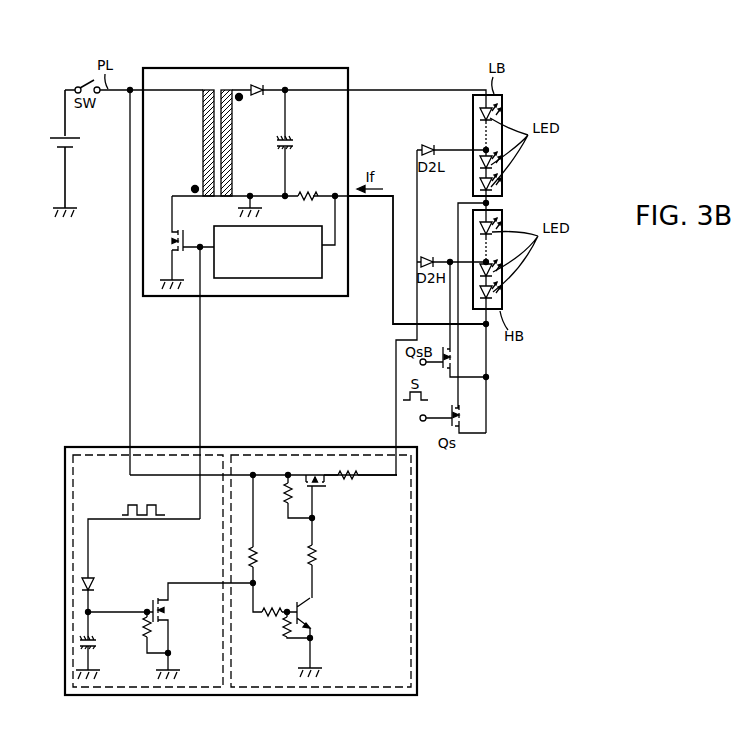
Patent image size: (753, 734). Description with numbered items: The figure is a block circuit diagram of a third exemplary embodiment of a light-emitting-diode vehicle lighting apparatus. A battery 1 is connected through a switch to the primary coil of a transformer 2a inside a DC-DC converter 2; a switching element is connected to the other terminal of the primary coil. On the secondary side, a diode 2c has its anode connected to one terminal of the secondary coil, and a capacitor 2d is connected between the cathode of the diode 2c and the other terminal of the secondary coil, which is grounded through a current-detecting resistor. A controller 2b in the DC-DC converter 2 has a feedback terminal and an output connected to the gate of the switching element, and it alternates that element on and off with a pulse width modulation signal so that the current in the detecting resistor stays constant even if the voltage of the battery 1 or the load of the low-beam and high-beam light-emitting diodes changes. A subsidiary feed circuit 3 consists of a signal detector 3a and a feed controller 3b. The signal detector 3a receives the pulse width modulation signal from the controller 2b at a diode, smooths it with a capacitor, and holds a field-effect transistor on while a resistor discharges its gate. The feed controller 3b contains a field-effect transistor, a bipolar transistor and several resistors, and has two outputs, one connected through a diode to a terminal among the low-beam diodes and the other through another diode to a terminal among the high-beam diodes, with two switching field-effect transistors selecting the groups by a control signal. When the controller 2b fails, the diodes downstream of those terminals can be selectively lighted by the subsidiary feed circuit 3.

The battery 1 is at (60, 133).
The DC-DC converter 2 is at (246, 67).
The transformer 2a is at (201, 144).
The controller 2b is at (222, 227).
The diode 2c is at (261, 99).
The capacitor 2d is at (295, 144).
The subsidiary feed circuit 3 is at (268, 446).
The signal detector 3a is at (73, 568).
The feed controller 3b is at (411, 560).